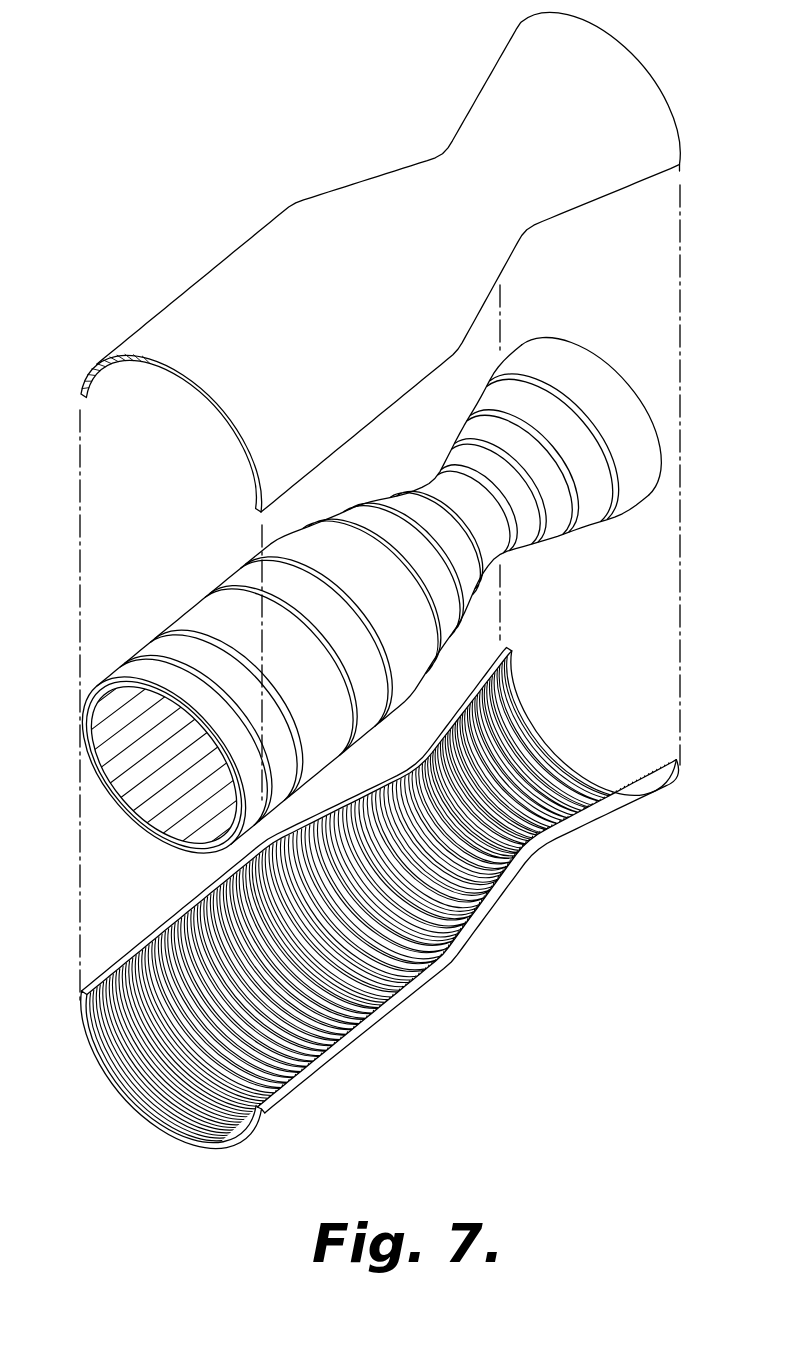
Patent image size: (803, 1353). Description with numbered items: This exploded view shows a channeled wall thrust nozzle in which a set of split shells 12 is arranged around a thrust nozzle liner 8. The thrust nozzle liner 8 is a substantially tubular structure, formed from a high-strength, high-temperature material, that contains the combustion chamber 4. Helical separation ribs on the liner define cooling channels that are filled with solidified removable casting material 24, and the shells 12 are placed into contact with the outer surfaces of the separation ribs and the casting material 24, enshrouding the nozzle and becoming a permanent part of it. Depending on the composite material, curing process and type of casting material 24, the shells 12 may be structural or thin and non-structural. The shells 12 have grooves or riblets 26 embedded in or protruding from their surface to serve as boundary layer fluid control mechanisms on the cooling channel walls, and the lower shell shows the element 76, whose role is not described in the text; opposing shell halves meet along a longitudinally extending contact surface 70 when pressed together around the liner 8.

The shell 12 is at (317, 194).
The contact surface 70 is at (374, 956).
The combustion chamber 4 is at (136, 778).
The thrust nozzle liner 8 is at (188, 845).
The removable casting material 24 is at (562, 512).
The grooves or riblets 26 is at (142, 1073).
The internal gripping ribs 76 is at (198, 1125).